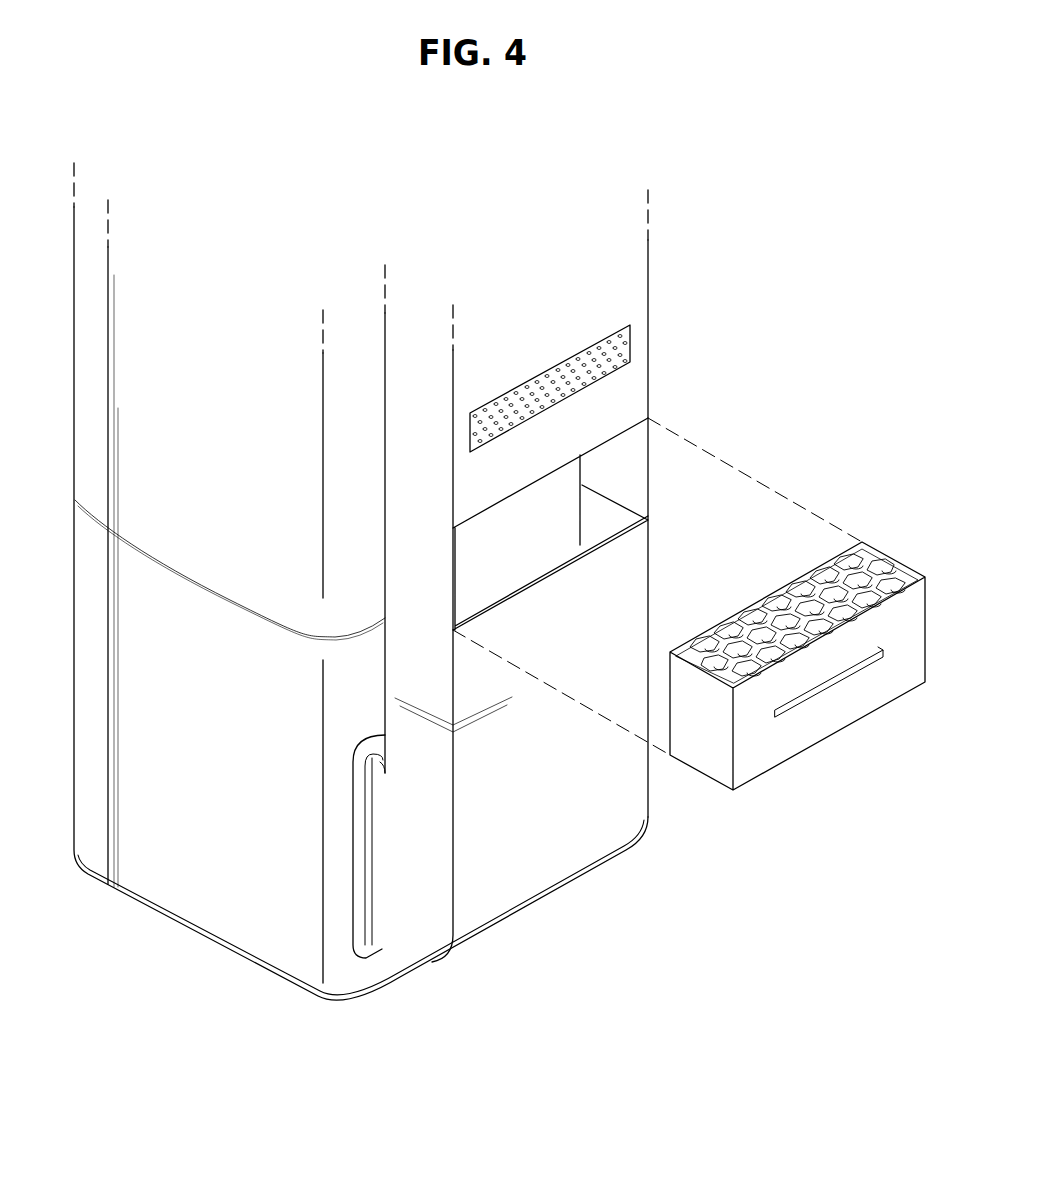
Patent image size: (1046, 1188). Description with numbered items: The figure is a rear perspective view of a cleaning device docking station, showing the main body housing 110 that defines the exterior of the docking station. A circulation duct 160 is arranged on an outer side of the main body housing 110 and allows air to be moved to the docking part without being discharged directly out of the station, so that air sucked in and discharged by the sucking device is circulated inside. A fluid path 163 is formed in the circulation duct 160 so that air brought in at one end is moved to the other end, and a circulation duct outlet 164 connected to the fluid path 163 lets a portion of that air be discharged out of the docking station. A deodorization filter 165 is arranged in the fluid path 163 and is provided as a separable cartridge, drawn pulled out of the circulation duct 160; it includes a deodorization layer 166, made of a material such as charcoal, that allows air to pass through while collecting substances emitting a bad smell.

The main body housing 110 is at (183, 908).
The circulation duct 160 is at (628, 273).
The fluid path 163 is at (553, 520).
The circulation duct outlet 164 is at (623, 350).
The deodorization filter 165 is at (770, 748).
The deodorization layer 166 is at (893, 562).